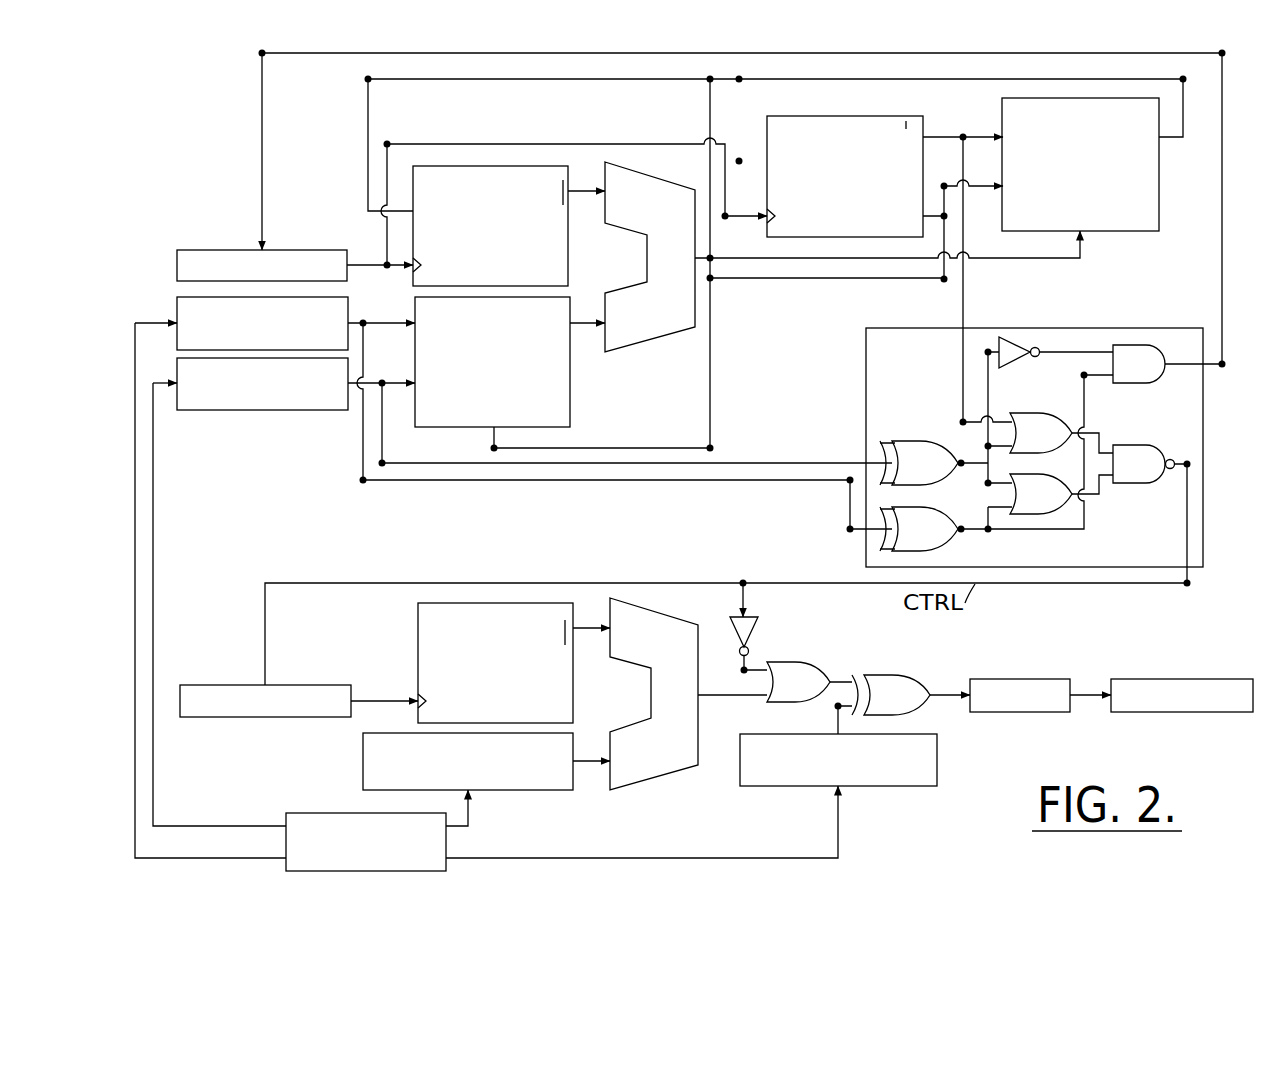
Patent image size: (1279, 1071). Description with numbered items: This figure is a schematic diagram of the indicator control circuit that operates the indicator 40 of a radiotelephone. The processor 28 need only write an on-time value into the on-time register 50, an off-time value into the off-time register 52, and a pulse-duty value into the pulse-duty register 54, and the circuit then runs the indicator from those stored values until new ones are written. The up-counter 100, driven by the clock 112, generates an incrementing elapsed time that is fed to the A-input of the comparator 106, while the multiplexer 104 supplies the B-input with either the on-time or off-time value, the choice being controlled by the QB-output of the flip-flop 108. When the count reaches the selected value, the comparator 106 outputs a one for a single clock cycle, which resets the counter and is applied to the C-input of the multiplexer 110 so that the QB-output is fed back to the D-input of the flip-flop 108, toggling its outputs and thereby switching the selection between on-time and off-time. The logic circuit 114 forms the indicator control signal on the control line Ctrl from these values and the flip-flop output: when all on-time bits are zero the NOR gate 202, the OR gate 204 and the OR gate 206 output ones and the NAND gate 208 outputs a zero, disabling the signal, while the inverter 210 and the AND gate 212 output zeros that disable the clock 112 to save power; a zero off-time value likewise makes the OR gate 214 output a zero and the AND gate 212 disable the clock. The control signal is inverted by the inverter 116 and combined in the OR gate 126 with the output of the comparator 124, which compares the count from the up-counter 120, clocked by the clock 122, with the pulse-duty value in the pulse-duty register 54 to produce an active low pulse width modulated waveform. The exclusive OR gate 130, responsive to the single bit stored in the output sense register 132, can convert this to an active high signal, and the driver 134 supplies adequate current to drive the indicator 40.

The clock 112 is at (203, 249).
The off-time register 52 is at (177, 307).
The on-time register 50 is at (208, 410).
The up-counter 100 is at (568, 270).
The comparator 106 is at (630, 345).
The multiplexer 104 is at (570, 412).
The flip-flop 108 is at (872, 116).
The multiplexer 110 is at (1100, 232).
The logic circuit 114 is at (1203, 412).
The NOR gate 202 is at (905, 442).
The OR gate 214 is at (912, 510).
The OR gate 204 is at (1025, 415).
The OR gate 206 is at (1025, 480).
The inverter 210 is at (1020, 370).
The AND gate 212 is at (1143, 383).
The NAND gate 208 is at (1146, 445).
The clock 122 is at (228, 685).
The up-counter 120 is at (418, 622).
The comparator 124 is at (660, 777).
The pulse-duty register 54 is at (538, 790).
The processor 28 is at (415, 871).
The inverter 116 is at (755, 626).
The OR gate 126 is at (803, 660).
The exclusive OR gate 130 is at (888, 672).
The output sense register 132 is at (940, 755).
The driver 134 is at (1020, 679).
The indicator 40 is at (1183, 679).